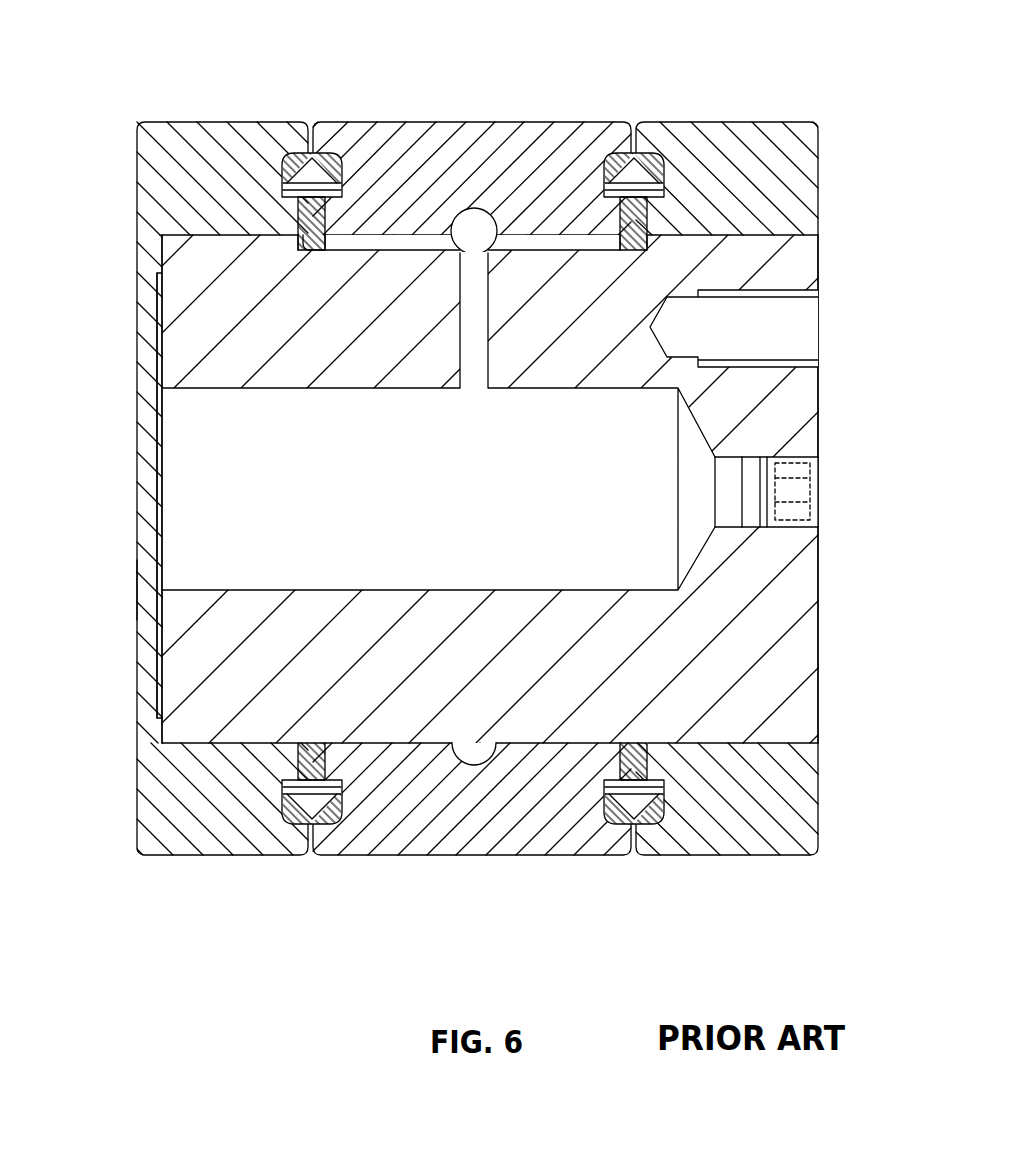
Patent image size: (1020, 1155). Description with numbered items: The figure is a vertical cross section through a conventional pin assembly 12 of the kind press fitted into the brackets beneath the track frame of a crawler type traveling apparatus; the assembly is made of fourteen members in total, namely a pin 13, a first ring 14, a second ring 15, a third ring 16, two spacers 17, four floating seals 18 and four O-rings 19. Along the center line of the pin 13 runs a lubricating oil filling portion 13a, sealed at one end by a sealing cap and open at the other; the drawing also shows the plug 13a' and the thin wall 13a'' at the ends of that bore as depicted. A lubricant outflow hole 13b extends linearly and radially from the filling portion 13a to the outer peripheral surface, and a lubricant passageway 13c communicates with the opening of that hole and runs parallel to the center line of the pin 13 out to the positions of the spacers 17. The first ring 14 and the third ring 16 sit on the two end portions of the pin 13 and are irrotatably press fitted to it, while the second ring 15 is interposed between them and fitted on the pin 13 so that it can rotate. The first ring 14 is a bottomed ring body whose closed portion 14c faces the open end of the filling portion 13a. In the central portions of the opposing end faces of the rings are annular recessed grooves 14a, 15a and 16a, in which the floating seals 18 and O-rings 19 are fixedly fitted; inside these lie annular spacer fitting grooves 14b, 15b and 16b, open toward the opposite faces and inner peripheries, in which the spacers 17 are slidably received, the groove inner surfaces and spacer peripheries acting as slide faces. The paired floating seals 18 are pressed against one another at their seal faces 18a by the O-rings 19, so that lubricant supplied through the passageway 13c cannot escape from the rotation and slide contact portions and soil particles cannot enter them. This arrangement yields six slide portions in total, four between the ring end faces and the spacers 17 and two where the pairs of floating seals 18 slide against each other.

The pin assembly 12 is at (121, 91).
The pin 13 is at (798, 656).
The lubricating oil filling portion 13a is at (490, 489).
The plug 13a' is at (809, 454).
The thin wall portion 13a'' is at (106, 495).
The lubricant outflow hole 13b is at (487, 300).
The lubricant passageway 13c is at (432, 236).
The first ring 14 is at (190, 122).
The annular recessed groove 14a is at (281, 812).
The annular spacer fitting groove 14b is at (293, 762).
The closed portion 14c is at (134, 585).
The second ring 15 is at (485, 122).
The annular recessed groove 15a is at (343, 812).
The annular spacer fitting groove 15b is at (323, 760).
The third ring 16 is at (775, 122).
The annular recessed groove 16a is at (665, 812).
The annular spacer fitting groove 16b is at (652, 762).
The spacer 17 is at (297, 203).
The floating seal 18 is at (283, 188).
The seal face 18a is at (342, 180).
The O-ring 19 is at (321, 153).